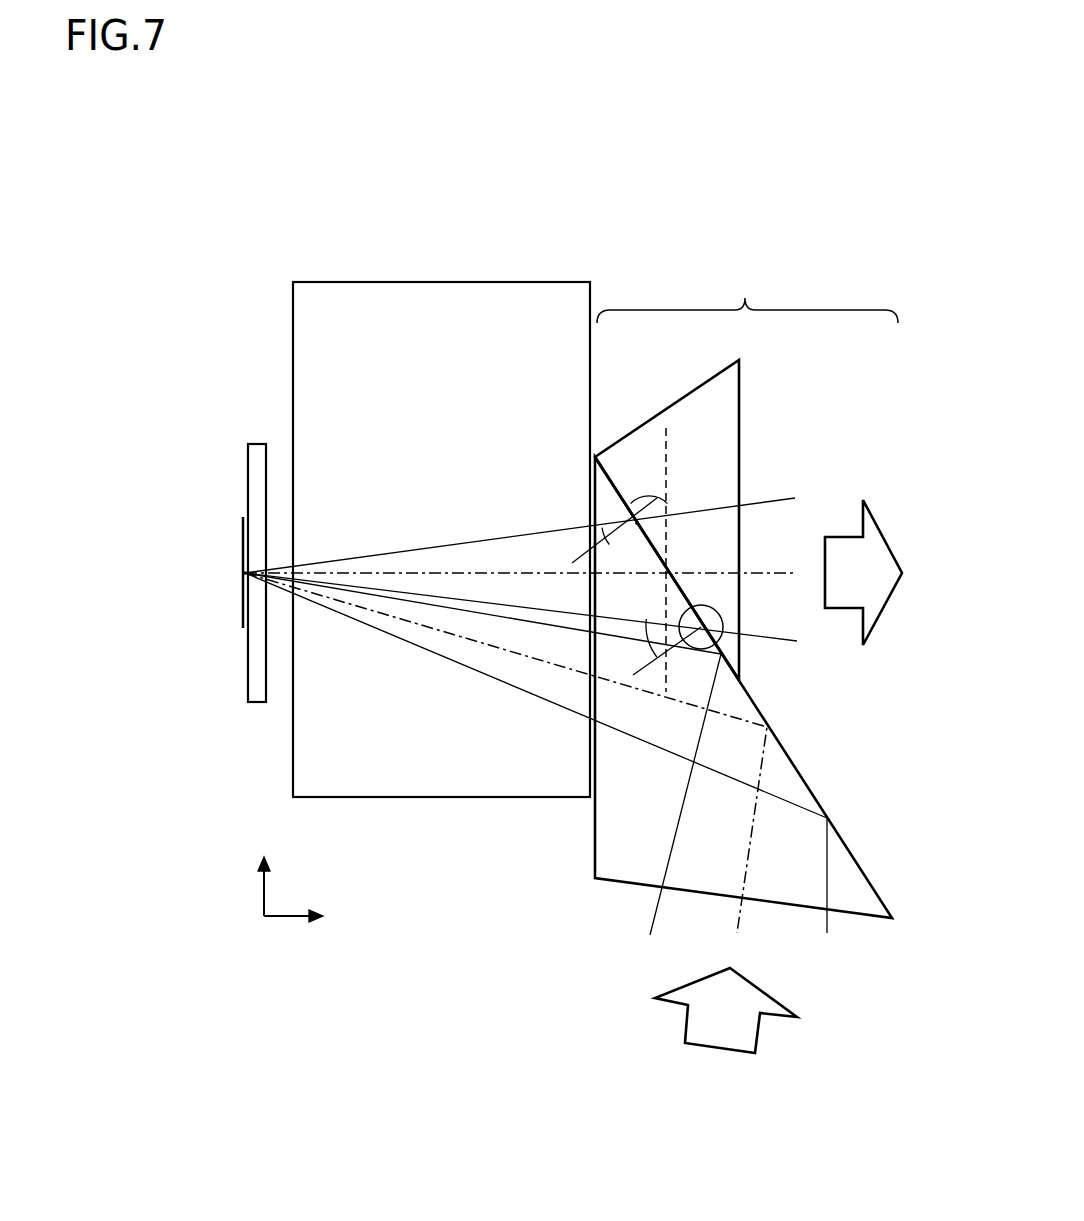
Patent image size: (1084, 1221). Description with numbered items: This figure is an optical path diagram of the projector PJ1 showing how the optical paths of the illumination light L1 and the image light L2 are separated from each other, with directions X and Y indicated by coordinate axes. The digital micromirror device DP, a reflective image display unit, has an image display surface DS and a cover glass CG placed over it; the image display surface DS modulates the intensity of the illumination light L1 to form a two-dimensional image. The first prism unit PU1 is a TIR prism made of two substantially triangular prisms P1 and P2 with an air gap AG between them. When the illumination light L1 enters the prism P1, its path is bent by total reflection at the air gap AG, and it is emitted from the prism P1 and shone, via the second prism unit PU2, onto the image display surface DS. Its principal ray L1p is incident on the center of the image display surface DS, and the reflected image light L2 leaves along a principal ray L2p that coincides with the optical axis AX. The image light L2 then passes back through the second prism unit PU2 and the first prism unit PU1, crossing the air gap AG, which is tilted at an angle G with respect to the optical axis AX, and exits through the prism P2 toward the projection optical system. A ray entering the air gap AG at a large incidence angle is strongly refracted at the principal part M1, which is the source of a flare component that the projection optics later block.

The projector PJ1 is at (652, 215).
The second prism unit PU2 is at (562, 328).
The first prism unit PU1 is at (747, 294).
The digital micromirror device DP is at (231, 586).
The image display surface DS is at (242, 617).
The cover glass CG is at (256, 705).
The prism P1 is at (648, 875).
The prism P2 is at (722, 438).
The air gap AG is at (621, 478).
The angle of the air gap G is at (649, 497).
The principal part M1 is at (718, 611).
The optical axis AX is at (590, 723).
The principal ray of the image light L2p is at (760, 572).
The principal ray of the illumination light L1p is at (742, 915).
The illumination light L1 is at (688, 1023).
The image light L2 is at (840, 610).
The X axis X is at (304, 916).
The Y axis Y is at (265, 870).